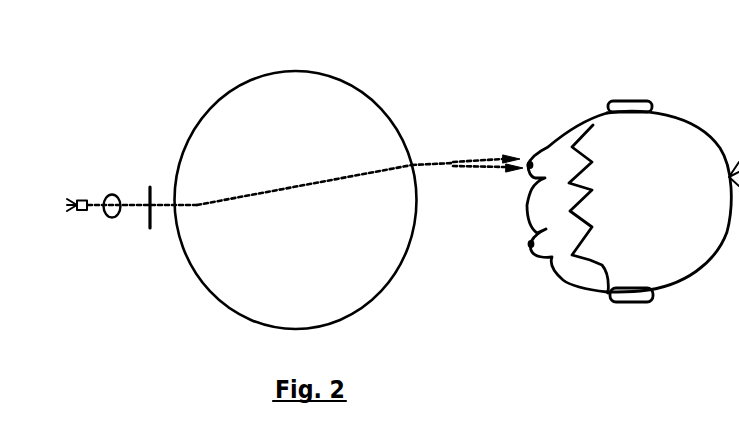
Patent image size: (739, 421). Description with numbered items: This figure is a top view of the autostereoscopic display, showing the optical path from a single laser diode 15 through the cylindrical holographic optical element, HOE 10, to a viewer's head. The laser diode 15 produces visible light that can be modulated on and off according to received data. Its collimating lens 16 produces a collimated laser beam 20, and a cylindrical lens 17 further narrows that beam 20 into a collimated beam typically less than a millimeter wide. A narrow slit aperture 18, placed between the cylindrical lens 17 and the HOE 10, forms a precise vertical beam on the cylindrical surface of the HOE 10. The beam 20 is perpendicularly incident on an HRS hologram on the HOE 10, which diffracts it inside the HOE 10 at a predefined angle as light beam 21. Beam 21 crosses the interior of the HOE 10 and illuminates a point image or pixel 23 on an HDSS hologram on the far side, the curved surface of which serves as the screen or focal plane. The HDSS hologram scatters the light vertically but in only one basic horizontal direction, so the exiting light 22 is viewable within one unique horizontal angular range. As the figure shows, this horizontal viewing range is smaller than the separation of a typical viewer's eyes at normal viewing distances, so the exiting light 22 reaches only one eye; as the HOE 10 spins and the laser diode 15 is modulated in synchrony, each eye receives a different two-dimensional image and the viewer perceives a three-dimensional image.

The holographic optical element (HOE) 10 is at (218, 101).
The laser diode 15 is at (78, 200).
The collimating lens 16 is at (87, 200).
The cylindrical lens 17 is at (112, 194).
The narrow slit aperture 18 is at (148, 187).
The collimated laser beam 20 is at (95, 210).
The diffracted light beam 21 is at (197, 206).
The exiting light 22 is at (492, 168).
The pixel 23 is at (412, 165).